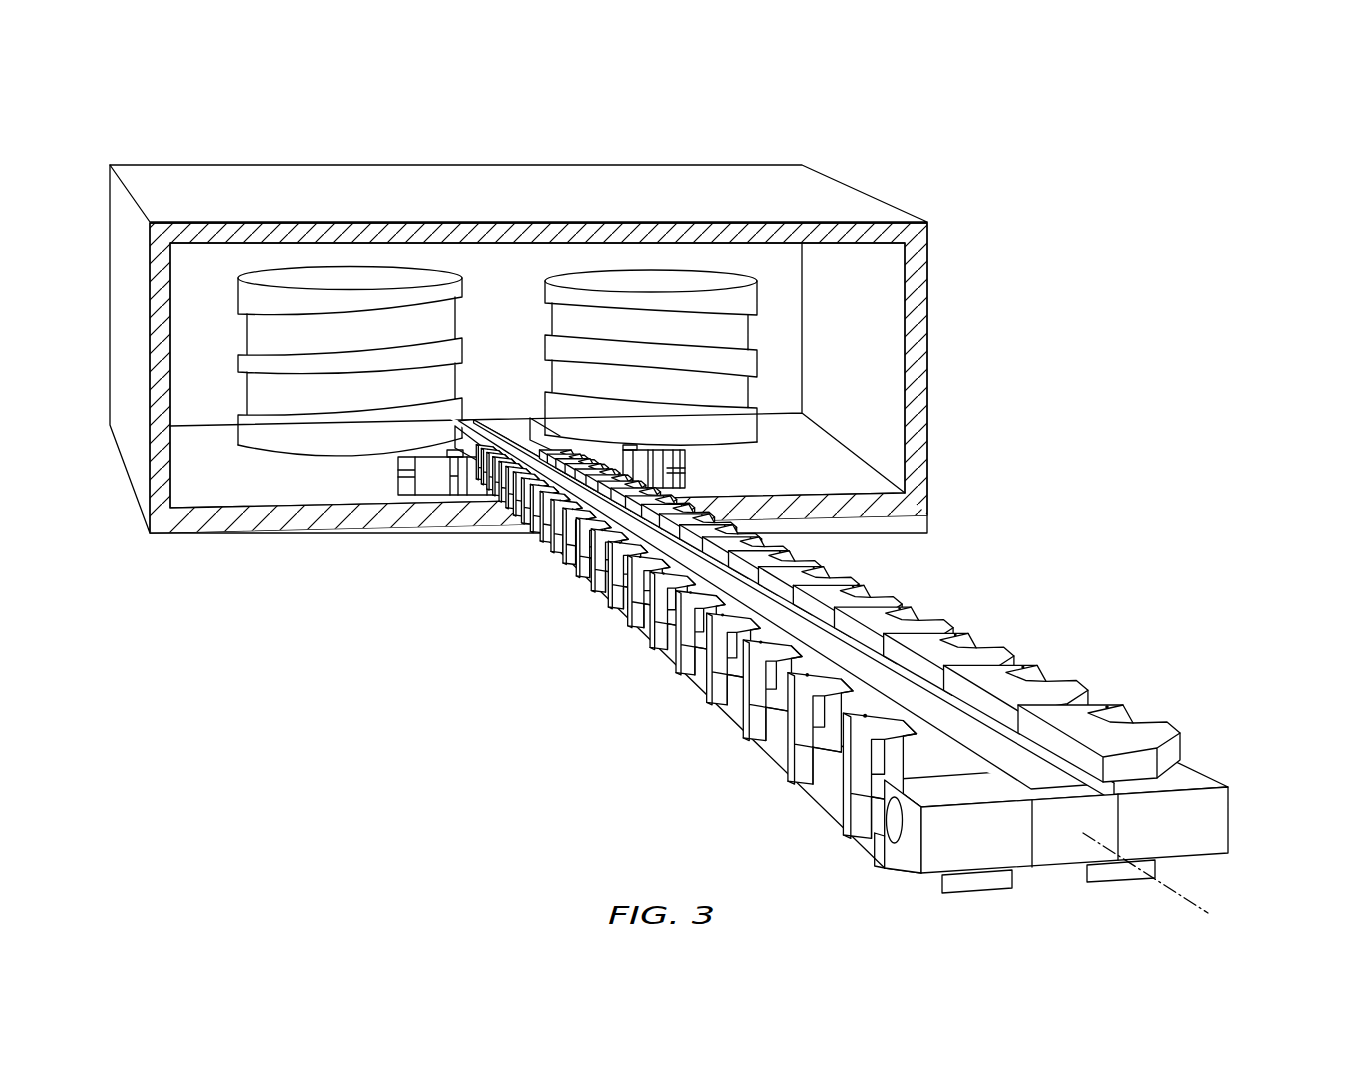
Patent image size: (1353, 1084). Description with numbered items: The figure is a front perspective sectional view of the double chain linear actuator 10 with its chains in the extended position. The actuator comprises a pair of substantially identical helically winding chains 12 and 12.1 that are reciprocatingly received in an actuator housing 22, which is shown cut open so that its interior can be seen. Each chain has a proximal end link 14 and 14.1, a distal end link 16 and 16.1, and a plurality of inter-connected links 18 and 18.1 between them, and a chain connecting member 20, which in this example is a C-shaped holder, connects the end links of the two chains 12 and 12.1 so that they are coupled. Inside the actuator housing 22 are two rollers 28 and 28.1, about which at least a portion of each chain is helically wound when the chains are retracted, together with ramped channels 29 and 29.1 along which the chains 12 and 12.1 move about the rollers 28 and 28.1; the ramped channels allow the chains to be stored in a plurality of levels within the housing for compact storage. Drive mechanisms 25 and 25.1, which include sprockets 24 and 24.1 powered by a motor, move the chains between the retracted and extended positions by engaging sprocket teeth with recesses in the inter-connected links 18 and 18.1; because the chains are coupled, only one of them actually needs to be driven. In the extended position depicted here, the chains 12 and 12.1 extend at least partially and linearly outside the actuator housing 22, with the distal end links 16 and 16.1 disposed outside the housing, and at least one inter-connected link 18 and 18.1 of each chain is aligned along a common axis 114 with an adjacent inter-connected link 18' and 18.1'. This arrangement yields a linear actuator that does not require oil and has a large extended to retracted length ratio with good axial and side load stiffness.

The double chain linear actuator 10 is at (405, 128).
The helically winding chain 12 is at (535, 590).
The helically winding chain 12.1 is at (1020, 623).
The proximal end link 14 is at (462, 423).
The proximal end link 14.1 is at (540, 418).
The distal end link 16 is at (930, 788).
The distal end link 16.1 is at (1193, 780).
The inter-connected link 18 is at (726, 701).
The adjacent inter-connected link 18' is at (684, 668).
The inter-connected link 18.1 is at (949, 632).
The adjacent inter-connected link 18.1' is at (893, 604).
The chain connecting member 20 is at (1058, 840).
The actuator housing 22 is at (226, 197).
The sprocket 24 is at (433, 453).
The sprocket 24.1 is at (650, 452).
The drive mechanism 25 is at (378, 485).
The drive mechanism 25.1 is at (703, 478).
The roller 28 is at (310, 277).
The roller 28.1 is at (712, 282).
The channel 29 is at (307, 332).
The channel 29.1 is at (713, 332).
The common axis 114 is at (1197, 910).